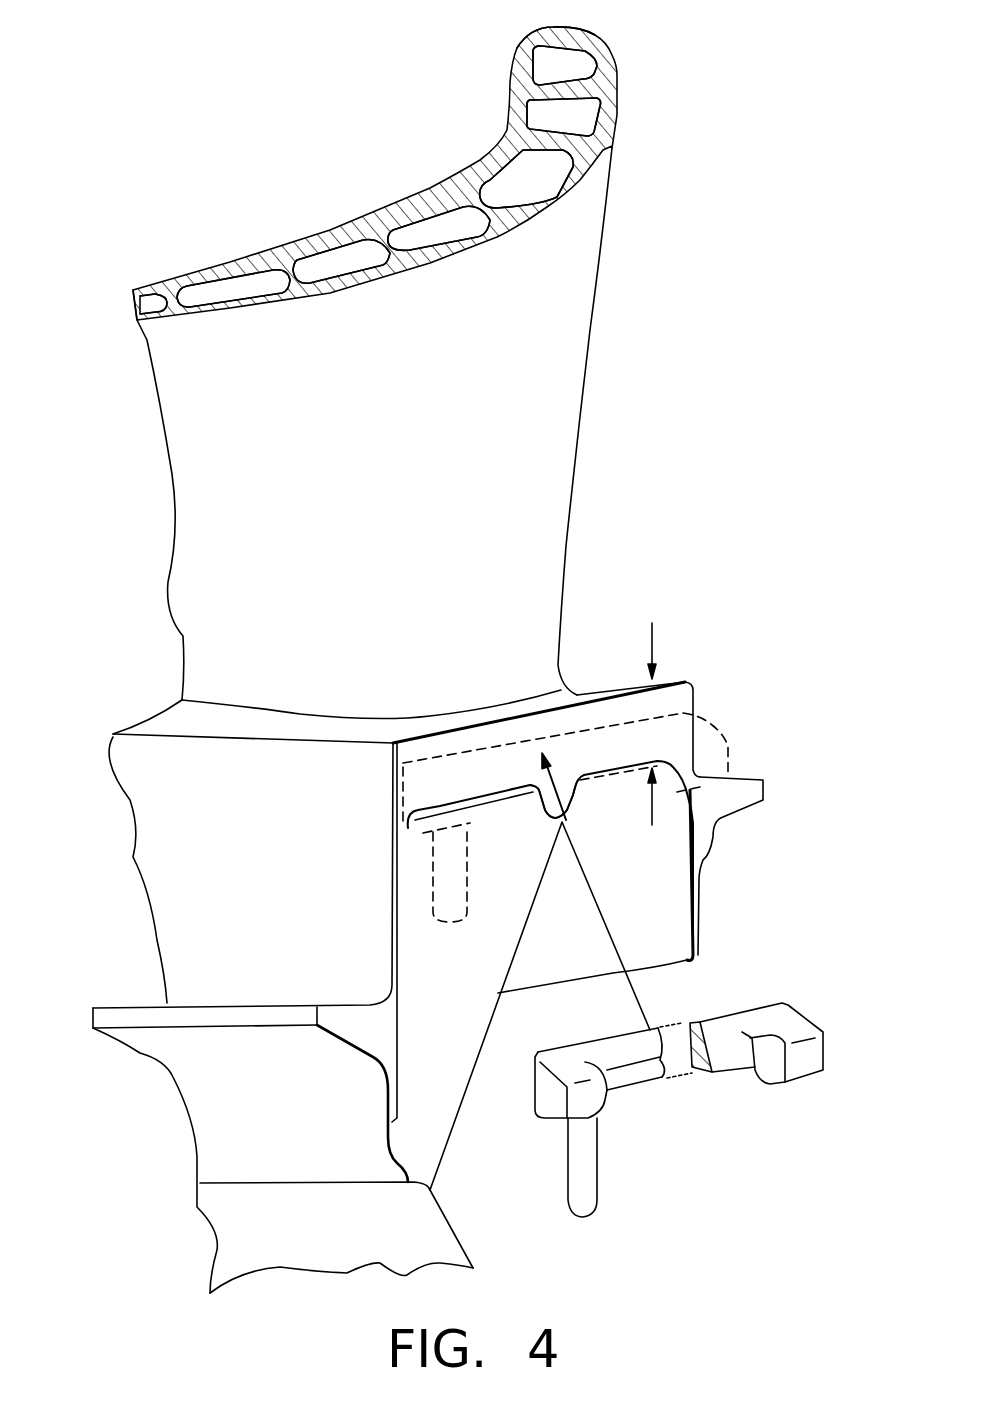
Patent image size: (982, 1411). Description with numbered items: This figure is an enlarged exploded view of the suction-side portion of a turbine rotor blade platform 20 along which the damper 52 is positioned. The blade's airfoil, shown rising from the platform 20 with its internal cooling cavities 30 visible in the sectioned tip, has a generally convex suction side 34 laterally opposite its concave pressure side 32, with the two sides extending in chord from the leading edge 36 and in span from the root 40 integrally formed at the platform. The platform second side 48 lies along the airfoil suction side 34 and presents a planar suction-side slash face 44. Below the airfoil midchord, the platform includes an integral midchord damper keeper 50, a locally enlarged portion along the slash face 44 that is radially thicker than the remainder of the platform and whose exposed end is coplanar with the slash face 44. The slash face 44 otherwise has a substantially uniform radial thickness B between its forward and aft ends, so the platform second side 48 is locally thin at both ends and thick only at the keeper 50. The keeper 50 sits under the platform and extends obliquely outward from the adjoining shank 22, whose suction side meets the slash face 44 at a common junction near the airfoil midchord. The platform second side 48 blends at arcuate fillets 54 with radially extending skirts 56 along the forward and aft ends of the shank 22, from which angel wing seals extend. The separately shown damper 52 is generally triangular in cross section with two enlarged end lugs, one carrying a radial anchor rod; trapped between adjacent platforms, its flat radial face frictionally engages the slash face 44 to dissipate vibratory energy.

The platform 20 is at (143, 712).
The shank 22 is at (415, 1078).
The internal cooling cavities 30 is at (527, 105).
The pressure side 32 is at (330, 232).
The suction side 34 is at (365, 467).
The leading edge 36 is at (575, 30).
The root 40 is at (360, 715).
The suction-side slash face 44 is at (673, 703).
The platform second side 48 is at (613, 690).
The midchord damper keeper 50 is at (545, 822).
The damper 52 is at (725, 740).
The arcuate fillets 54 is at (410, 827).
The skirts 56 is at (232, 939).
The radial thickness B is at (653, 642).